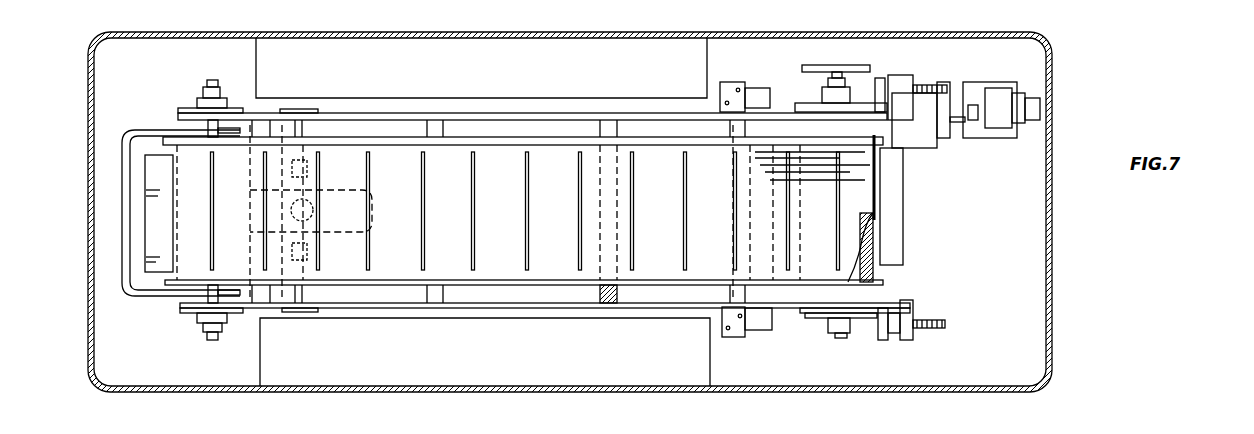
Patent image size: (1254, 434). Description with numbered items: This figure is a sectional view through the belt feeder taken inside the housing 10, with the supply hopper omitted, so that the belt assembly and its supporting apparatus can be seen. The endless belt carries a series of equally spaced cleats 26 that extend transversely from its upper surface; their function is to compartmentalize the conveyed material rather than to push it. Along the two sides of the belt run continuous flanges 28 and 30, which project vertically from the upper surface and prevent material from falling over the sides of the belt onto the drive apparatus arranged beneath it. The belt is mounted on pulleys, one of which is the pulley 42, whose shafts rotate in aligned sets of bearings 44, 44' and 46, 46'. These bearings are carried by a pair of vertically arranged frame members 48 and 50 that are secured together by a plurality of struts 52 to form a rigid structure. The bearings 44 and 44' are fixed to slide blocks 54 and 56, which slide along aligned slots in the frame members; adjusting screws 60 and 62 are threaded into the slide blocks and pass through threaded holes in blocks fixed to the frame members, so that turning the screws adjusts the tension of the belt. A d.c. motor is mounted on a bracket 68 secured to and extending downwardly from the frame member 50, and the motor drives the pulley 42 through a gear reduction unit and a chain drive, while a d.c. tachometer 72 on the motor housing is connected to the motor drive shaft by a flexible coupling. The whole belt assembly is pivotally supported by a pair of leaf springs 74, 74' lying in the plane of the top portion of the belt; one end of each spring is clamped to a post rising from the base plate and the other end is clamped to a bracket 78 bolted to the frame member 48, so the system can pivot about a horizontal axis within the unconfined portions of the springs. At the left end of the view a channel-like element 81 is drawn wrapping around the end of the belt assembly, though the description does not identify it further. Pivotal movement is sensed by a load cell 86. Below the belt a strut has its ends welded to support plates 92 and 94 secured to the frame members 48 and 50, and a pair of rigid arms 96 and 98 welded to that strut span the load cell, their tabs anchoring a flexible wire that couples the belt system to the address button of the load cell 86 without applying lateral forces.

The housing 10 is at (1054, 268).
The cleats 26 is at (205, 180).
The continuous flange 28 is at (563, 145).
The continuous flange 30 is at (480, 280).
The pulley 42 is at (873, 268).
The bearing 44 is at (853, 339).
The bearing 44' is at (819, 88).
The bearing 46 is at (189, 329).
The bearing 46' is at (189, 89).
The frame member 48 is at (455, 308).
The frame member 50 is at (527, 113).
The struts 52 is at (254, 260).
The slide block 54 is at (882, 315).
The slide block 56 is at (905, 75).
The adjusting screw 60 is at (945, 326).
The adjusting screw 62 is at (927, 85).
The bracket 68 is at (920, 146).
The d.c. tachometer 72 is at (1003, 138).
The leaf spring 74 is at (747, 338).
The leaf spring 74' is at (720, 89).
The bracket 78 is at (722, 325).
The end channel 81 is at (134, 293).
The load cell 86 is at (374, 198).
The support plate 92 is at (308, 312).
The support plate 94 is at (305, 109).
The rigid arm 96 is at (310, 255).
The rigid arm 98 is at (310, 168).